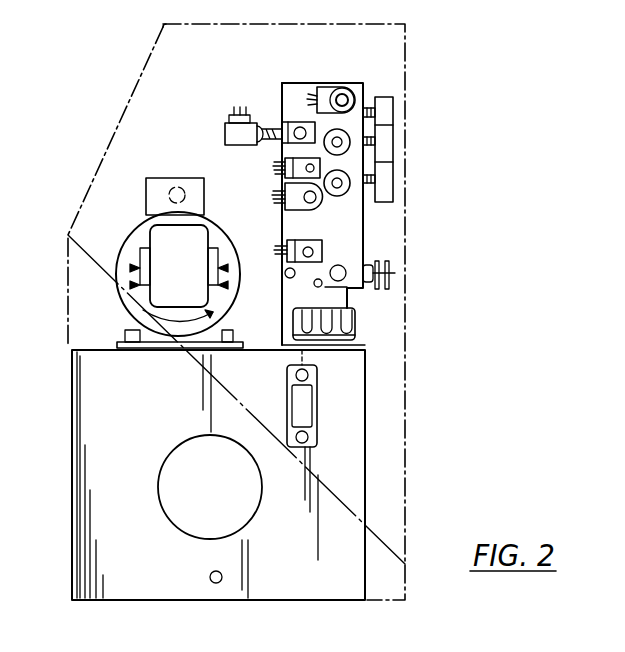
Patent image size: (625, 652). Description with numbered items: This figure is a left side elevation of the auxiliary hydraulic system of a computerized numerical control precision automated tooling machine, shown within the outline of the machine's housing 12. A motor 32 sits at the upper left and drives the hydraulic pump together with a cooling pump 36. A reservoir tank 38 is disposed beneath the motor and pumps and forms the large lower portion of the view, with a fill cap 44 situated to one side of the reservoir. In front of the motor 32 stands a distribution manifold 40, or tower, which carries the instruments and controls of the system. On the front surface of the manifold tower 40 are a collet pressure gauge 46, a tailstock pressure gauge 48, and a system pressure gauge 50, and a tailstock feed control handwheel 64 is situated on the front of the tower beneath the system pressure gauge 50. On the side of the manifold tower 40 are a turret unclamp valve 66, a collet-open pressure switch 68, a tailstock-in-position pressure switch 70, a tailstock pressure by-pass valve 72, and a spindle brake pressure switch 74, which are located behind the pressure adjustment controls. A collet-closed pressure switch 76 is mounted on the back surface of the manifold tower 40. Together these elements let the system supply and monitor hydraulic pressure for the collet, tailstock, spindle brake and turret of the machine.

The housing 12 is at (414, 441).
The motor 32 is at (133, 234).
The cooling pump 36 is at (155, 295).
The reservoir tank 38 is at (92, 428).
The distribution manifold 40 is at (346, 82).
The fill cap 44 is at (356, 336).
The collet pressure gauge 46 is at (400, 108).
The tailstock pressure gauge 48 is at (400, 138).
The system pressure gauge 50 is at (400, 181).
The tailstock feed control handwheel 64 is at (395, 275).
The turret unclamp valve 66 is at (312, 96).
The collet-open pressure switch 68 is at (297, 122).
The tailstock-in-position pressure switch 70 is at (275, 165).
The tailstock pressure by-pass valve 72 is at (276, 200).
The spindle brake pressure switch 74 is at (308, 262).
The collet-closed pressure switch 76 is at (225, 133).